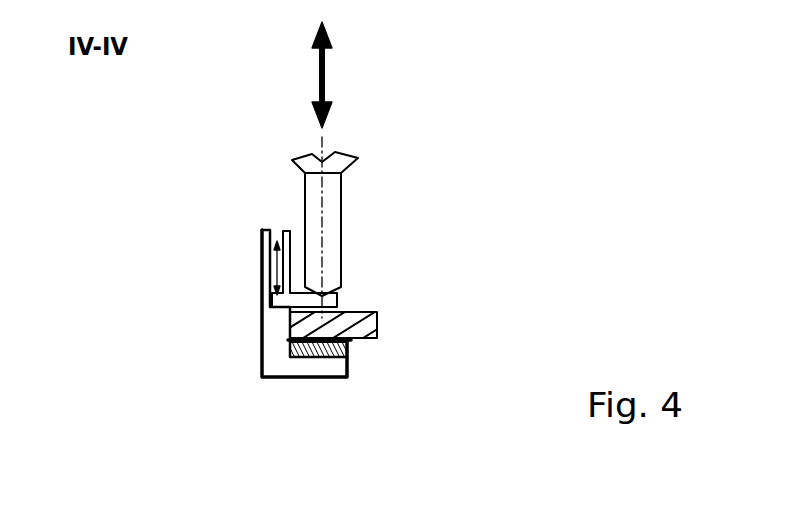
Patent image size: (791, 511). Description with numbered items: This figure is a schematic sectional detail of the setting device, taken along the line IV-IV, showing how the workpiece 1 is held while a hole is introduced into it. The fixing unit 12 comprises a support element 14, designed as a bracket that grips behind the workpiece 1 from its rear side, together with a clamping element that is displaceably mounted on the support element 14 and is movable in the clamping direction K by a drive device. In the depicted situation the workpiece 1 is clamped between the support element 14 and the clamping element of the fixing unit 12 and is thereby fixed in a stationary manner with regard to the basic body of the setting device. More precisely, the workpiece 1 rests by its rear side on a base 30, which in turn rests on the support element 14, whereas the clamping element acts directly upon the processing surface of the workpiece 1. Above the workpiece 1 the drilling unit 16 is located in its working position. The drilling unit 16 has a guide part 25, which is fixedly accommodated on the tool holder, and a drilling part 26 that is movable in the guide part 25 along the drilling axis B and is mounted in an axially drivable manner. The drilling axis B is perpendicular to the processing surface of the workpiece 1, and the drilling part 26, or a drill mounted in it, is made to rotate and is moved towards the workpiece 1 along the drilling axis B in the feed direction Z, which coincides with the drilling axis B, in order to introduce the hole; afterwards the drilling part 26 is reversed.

The workpiece 1 is at (378, 335).
The fixing unit 12 is at (262, 327).
The support element 14 is at (337, 302).
The drilling unit 16 is at (419, 224).
The guide part 25 is at (340, 165).
The drilling part 26 is at (342, 202).
The base 30 is at (348, 345).
The clamping direction K is at (270, 260).
The feed direction Z is at (328, 82).
The drilling axis B is at (322, 145).